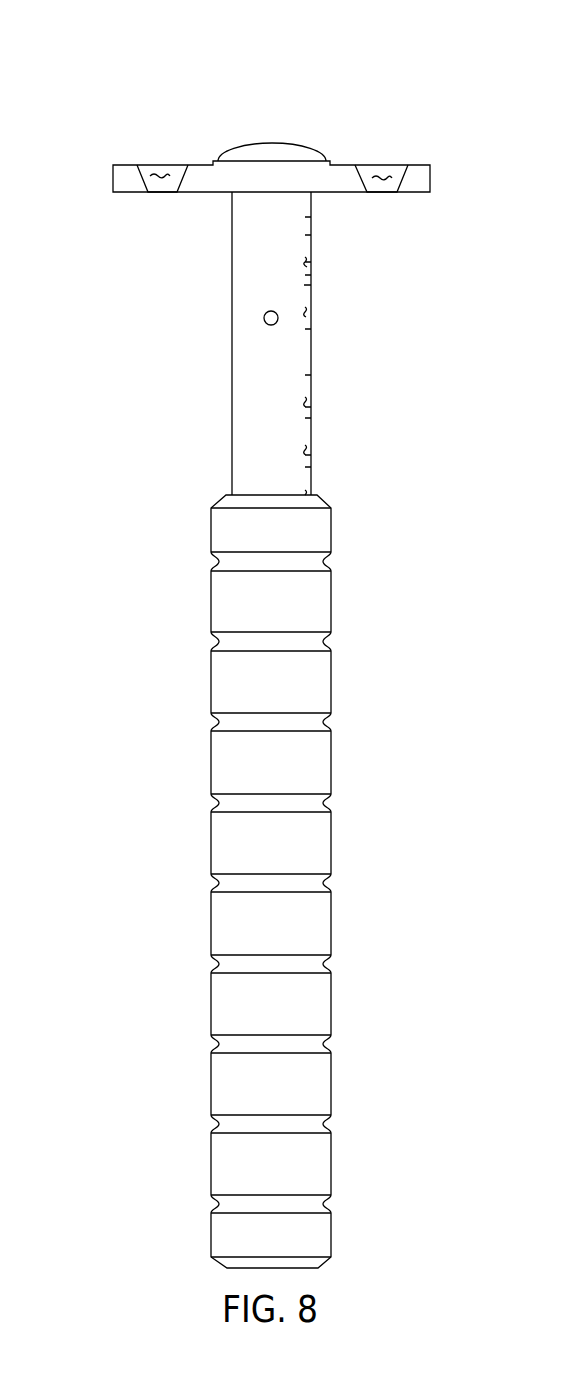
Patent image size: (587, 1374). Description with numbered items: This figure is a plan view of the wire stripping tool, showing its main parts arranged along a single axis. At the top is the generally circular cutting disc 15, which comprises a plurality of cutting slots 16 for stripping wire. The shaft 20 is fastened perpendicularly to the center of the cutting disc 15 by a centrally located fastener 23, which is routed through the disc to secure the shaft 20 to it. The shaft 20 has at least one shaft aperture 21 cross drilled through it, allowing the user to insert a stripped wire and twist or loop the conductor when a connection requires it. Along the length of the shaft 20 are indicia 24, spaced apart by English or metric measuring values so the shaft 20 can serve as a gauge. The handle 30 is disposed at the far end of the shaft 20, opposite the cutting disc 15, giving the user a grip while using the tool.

The cutting disc 15 is at (197, 164).
The cutting slots 16 is at (158, 176).
The shaft 20 is at (260, 444).
The shaft aperture 21 is at (264, 321).
The fastener 23 is at (277, 152).
The indicia 24 is at (313, 262).
The handle 30 is at (212, 932).